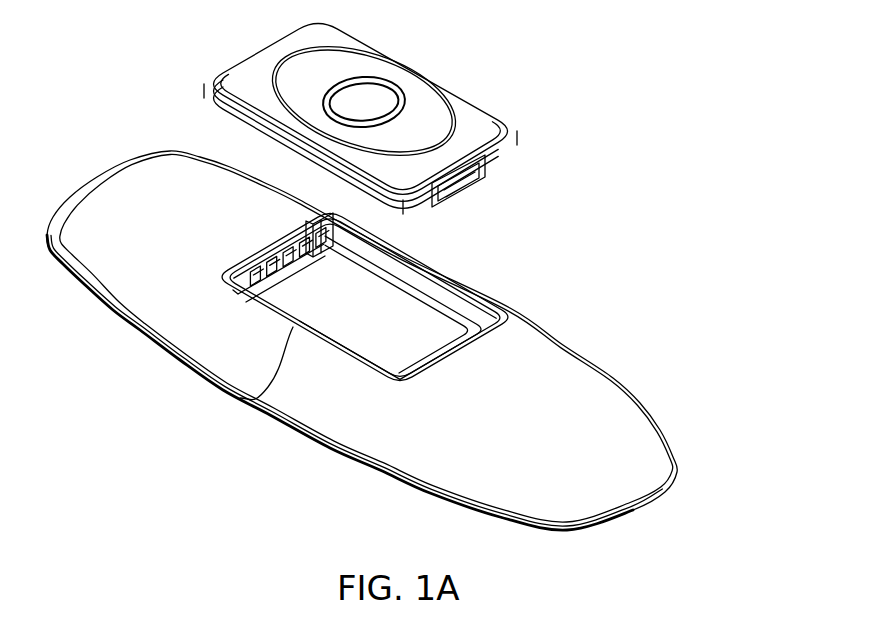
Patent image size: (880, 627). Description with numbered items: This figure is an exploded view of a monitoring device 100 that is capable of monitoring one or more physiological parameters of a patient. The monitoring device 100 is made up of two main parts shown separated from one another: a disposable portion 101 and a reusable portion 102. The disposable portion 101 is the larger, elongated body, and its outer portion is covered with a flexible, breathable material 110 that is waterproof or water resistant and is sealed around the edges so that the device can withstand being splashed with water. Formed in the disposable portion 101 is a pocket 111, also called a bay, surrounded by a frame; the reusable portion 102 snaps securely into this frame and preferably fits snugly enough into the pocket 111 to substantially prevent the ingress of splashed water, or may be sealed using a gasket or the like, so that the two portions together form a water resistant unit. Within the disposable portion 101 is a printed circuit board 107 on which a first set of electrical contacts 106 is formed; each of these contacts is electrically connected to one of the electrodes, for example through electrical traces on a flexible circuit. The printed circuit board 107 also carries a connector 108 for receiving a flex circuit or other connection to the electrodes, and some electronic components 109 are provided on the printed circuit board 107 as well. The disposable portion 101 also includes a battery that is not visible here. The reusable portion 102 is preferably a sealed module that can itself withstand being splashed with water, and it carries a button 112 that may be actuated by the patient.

The monitoring device 100 is at (131, 58).
The disposable portion 101 is at (570, 366).
The reusable portion 102 is at (463, 112).
The electrical contacts 106 is at (297, 250).
The printed circuit board 107 is at (265, 280).
The connector 108 is at (307, 261).
The electronic components 109 is at (272, 285).
The flexible, breathable material 110 is at (539, 443).
The pocket 111 is at (420, 326).
The button 112 is at (376, 100).